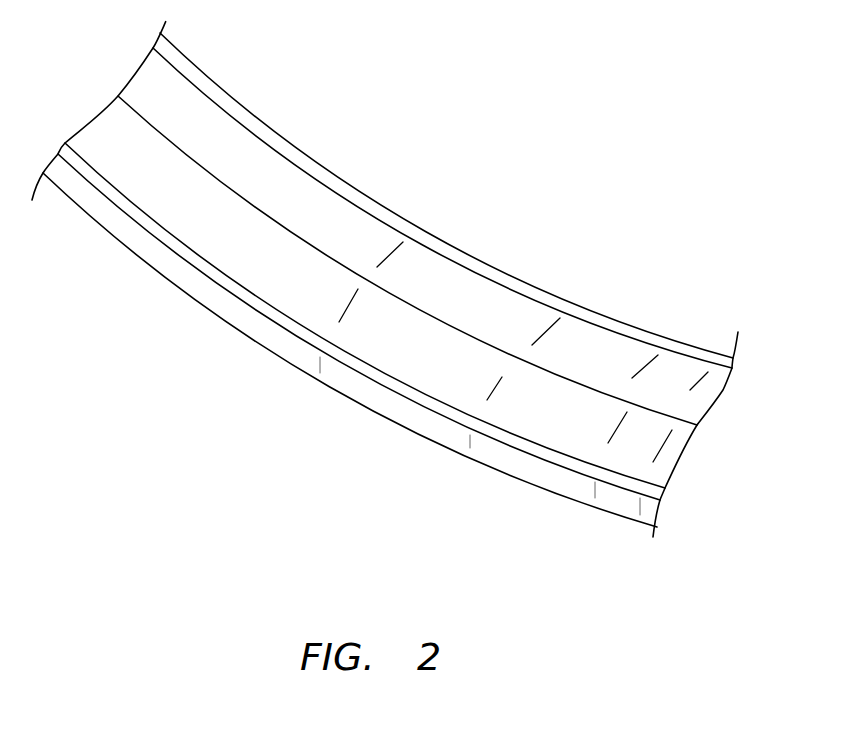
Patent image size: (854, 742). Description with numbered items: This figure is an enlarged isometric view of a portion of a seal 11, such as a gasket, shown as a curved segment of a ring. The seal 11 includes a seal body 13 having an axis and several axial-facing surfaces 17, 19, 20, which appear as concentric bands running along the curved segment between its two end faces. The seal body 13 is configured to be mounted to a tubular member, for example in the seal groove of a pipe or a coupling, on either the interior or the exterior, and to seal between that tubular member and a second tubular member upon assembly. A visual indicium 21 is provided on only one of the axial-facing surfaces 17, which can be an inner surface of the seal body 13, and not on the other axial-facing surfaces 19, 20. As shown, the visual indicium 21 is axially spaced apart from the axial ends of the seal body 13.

The seal 11 is at (408, 291).
The seal body 13 is at (707, 393).
The axial-facing surface 17 is at (668, 455).
The axial-facing surface 19 is at (650, 510).
The axial-facing surface 20 is at (475, 258).
The visual indicium 21 is at (392, 347).